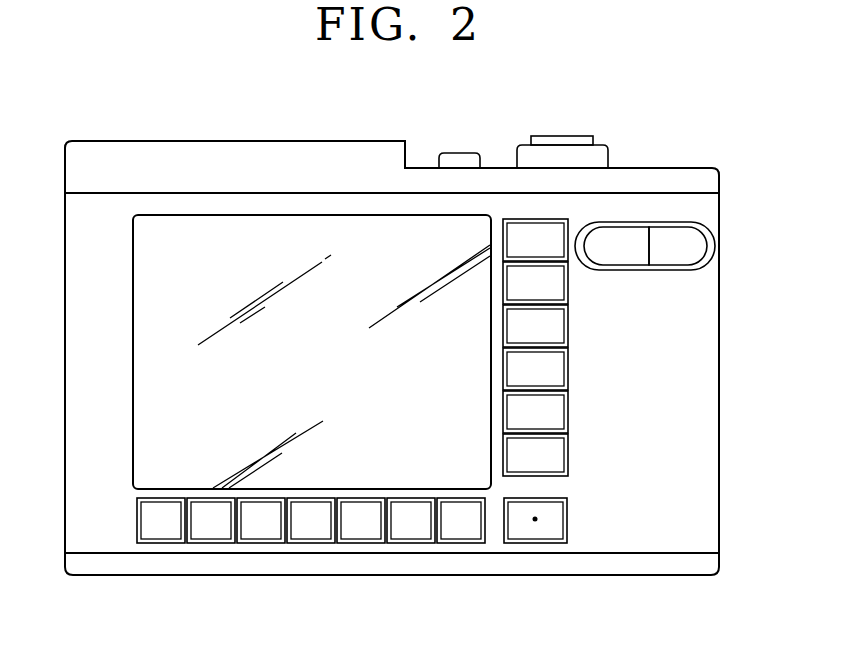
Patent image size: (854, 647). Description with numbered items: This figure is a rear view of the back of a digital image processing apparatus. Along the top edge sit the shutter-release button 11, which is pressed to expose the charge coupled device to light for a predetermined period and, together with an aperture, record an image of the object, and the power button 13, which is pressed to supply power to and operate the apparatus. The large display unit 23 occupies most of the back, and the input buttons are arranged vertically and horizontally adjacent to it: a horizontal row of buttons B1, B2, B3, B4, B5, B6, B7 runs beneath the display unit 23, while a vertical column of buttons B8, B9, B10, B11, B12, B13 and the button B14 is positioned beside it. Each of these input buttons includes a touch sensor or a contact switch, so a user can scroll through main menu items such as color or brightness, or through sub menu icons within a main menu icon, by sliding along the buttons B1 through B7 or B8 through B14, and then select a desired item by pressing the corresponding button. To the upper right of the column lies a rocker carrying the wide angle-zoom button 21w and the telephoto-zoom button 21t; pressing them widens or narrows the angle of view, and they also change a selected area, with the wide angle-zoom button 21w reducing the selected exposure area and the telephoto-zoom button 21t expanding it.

The shutter-release button 11 is at (563, 140).
The power button 13 is at (460, 157).
The display unit 23 is at (207, 230).
The wide angle-zoom button 21w is at (616, 246).
The telephoto-zoom button 21t is at (678, 246).
The input button B1 is at (161, 520).
The input button B2 is at (211, 520).
The input button B3 is at (261, 520).
The input button B4 is at (311, 520).
The input button B5 is at (361, 520).
The input button B6 is at (411, 520).
The input button B7 is at (461, 520).
The input button B8 is at (535, 240).
The input button B9 is at (535, 283).
The input button B10 is at (535, 326).
The input button B11 is at (535, 369).
The input button B12 is at (535, 412).
The input button B13 is at (535, 455).
The input button B14 is at (569, 519).